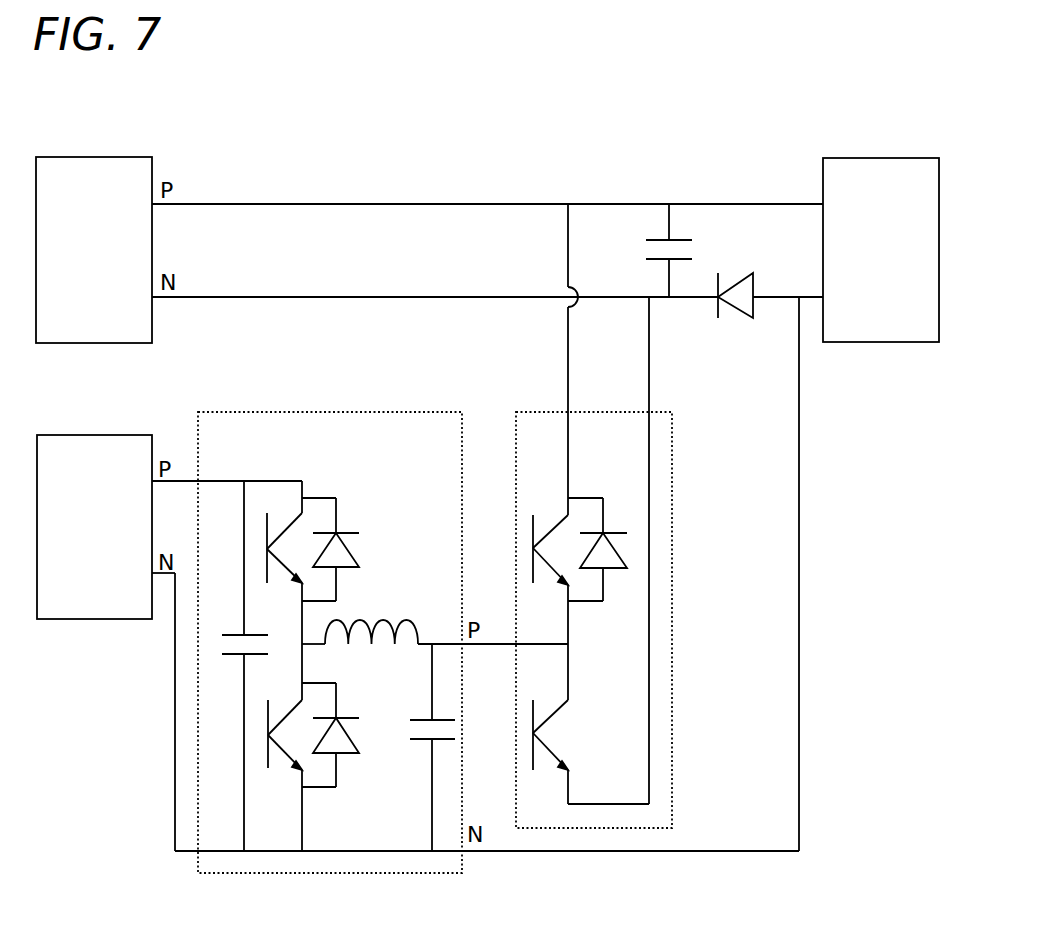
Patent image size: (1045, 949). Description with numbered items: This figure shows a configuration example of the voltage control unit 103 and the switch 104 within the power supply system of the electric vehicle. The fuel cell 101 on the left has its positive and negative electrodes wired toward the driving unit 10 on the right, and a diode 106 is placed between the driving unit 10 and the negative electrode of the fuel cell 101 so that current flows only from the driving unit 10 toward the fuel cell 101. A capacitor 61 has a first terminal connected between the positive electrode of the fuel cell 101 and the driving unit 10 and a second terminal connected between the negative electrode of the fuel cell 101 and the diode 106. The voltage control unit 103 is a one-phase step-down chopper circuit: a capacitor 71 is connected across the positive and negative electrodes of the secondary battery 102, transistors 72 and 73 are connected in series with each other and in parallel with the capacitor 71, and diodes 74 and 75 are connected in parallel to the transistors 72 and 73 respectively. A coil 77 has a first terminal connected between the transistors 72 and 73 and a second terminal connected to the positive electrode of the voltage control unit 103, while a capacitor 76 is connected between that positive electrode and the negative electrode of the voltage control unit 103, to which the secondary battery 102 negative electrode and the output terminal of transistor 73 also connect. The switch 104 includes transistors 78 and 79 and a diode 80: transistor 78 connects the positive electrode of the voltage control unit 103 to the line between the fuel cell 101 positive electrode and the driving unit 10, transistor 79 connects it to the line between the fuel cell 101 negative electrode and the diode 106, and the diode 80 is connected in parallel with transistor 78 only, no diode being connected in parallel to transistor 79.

The driving unit 10 is at (880, 157).
The capacitor 61 is at (683, 238).
The capacitor 71 is at (222, 633).
The transistor 72 is at (267, 518).
The transistor 73 is at (270, 770).
The diode 74 is at (353, 530).
The diode 75 is at (355, 717).
The capacitor 76 is at (417, 743).
The coil 77 is at (407, 622).
The transistor 78 is at (532, 518).
The transistor 79 is at (532, 705).
The diode 80 is at (614, 532).
The fuel cell 101 is at (91, 157).
The secondary battery 102 is at (91, 434).
The voltage control unit 103 is at (337, 410).
The switch 104 is at (532, 410).
The diode 106 is at (753, 316).